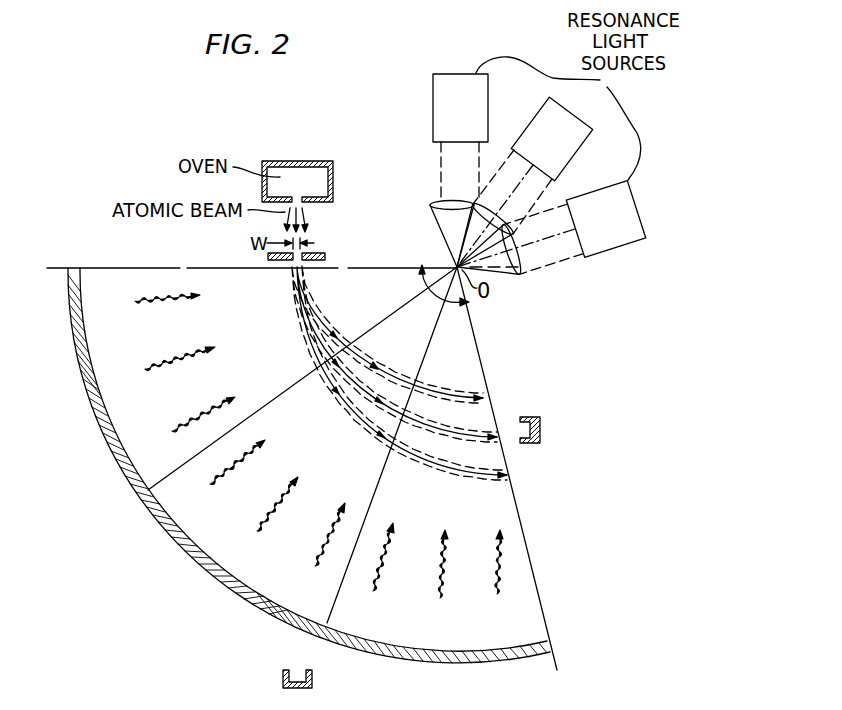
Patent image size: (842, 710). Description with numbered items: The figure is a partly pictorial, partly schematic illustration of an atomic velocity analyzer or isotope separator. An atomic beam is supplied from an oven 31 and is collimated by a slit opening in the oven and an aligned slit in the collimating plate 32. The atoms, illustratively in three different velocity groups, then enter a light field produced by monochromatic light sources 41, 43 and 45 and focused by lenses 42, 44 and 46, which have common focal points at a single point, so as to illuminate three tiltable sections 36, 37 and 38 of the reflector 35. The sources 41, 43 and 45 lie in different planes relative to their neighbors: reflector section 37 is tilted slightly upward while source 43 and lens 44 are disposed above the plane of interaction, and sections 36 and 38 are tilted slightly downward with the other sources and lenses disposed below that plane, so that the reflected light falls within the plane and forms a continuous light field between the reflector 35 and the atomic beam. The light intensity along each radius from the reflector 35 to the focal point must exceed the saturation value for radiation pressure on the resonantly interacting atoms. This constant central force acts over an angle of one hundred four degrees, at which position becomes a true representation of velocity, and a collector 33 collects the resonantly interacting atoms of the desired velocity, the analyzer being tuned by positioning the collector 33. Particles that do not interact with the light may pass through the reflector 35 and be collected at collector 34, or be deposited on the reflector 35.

The oven 31 is at (292, 162).
The collimating plate 32 is at (323, 254).
The collector 33 is at (541, 430).
The collector 34 is at (283, 682).
The reflector 35 is at (65, 541).
The tiltable section 36 is at (92, 412).
The tiltable section 37 is at (198, 566).
The tiltable section 38 is at (404, 662).
The monochromatic light source 41 is at (489, 97).
The lens 42 is at (452, 201).
The monochromatic light source 43 is at (581, 151).
The lens 44 is at (496, 210).
The monochromatic light source 45 is at (647, 216).
The lens 46 is at (523, 250).